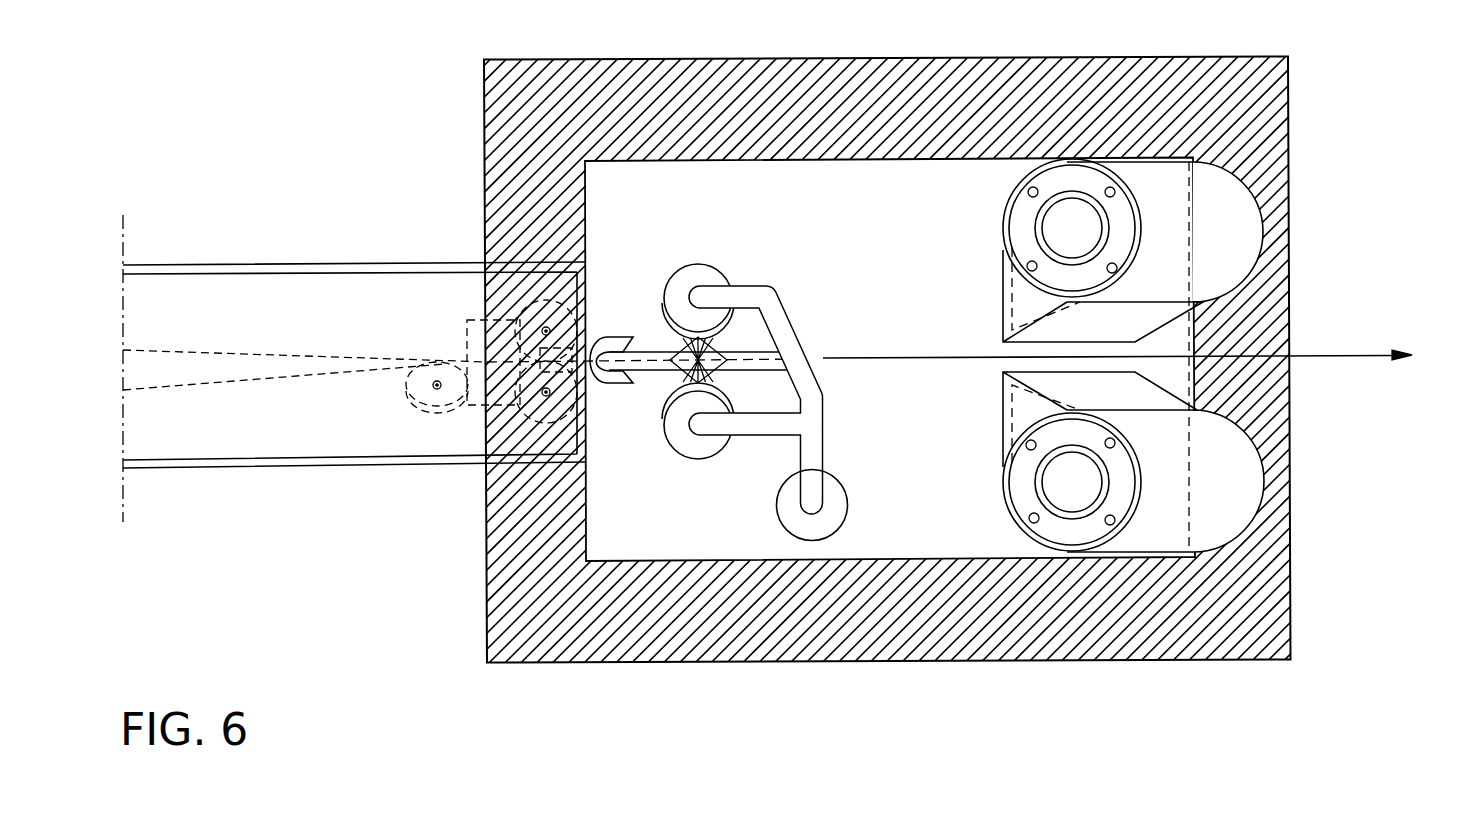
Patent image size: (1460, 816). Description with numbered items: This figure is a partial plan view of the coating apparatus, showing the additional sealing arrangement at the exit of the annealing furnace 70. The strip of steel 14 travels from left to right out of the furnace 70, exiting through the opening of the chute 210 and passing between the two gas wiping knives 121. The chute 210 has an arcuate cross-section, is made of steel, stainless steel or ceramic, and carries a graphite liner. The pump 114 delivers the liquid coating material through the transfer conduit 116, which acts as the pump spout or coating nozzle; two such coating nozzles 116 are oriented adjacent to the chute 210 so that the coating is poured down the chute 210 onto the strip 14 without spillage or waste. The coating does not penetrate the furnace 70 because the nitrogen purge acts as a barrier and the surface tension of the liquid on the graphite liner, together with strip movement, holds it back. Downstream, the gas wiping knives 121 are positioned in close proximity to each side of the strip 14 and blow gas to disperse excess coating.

The annealing furnace 70 is at (350, 480).
The chute 210 is at (610, 334).
The transfer conduit 116 is at (710, 277).
The pump 114 is at (848, 500).
The gas wiping knives 121 is at (1242, 212).
The strip of steel 14 is at (1318, 356).